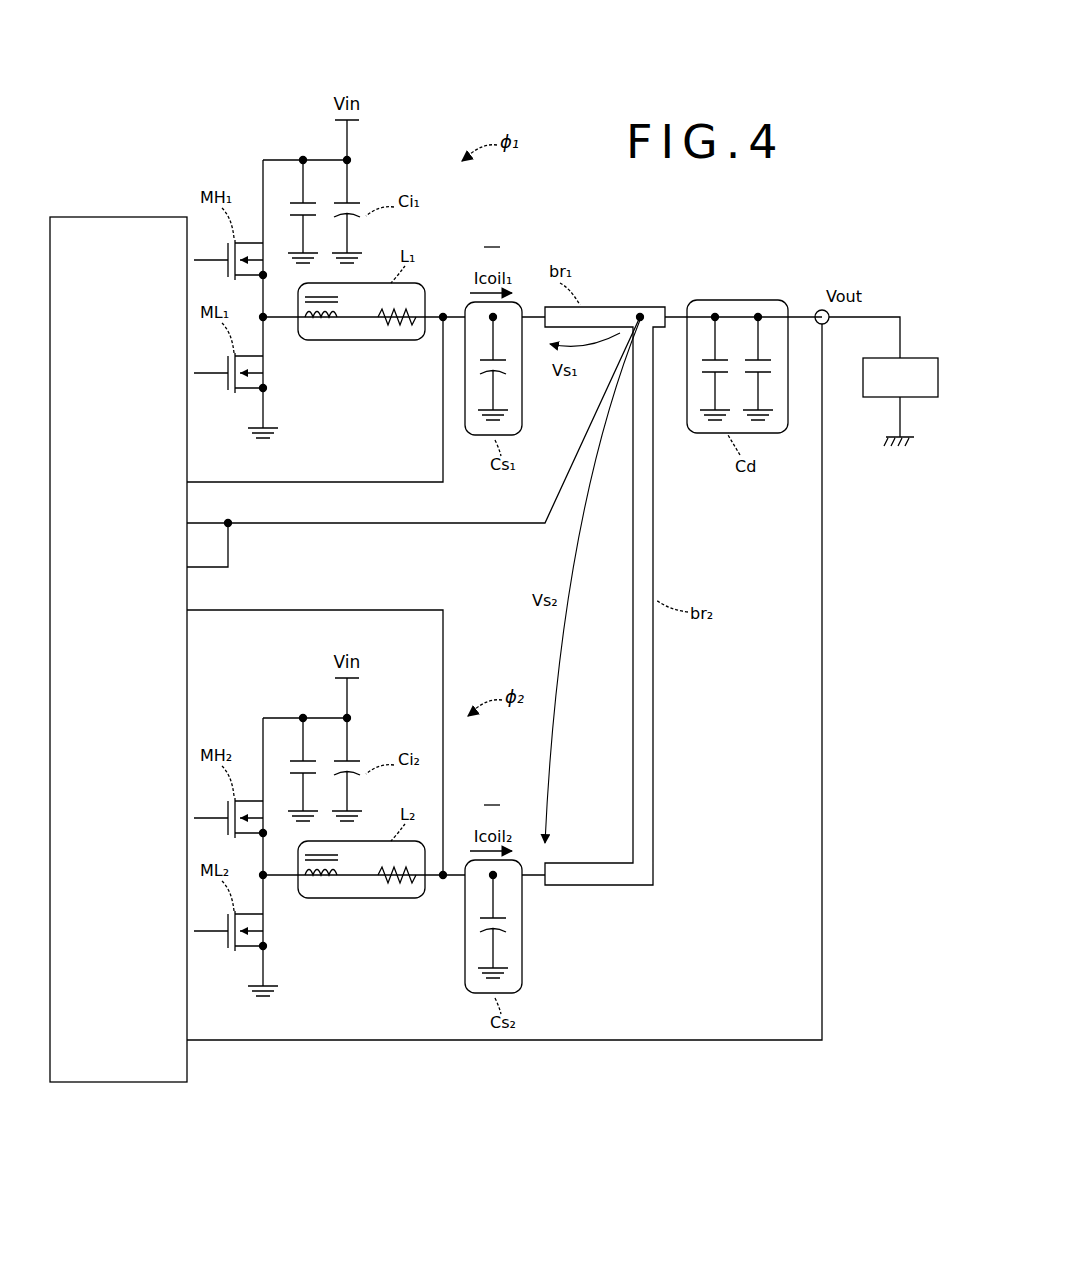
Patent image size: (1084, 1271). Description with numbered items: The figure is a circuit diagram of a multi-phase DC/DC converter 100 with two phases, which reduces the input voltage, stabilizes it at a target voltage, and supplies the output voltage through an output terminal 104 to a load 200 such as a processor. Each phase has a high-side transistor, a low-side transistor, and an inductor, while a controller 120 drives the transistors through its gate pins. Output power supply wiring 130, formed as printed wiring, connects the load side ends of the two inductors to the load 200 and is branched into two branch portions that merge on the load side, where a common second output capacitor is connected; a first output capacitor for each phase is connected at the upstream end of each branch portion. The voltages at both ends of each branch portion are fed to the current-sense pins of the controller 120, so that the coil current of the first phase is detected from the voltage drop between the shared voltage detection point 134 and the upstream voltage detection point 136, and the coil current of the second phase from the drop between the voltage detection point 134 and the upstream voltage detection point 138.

The multi-phase DC/DC converter 100 is at (514, 1142).
The output terminal 104 is at (816, 308).
The controller 120 is at (118, 217).
The output power supply wiring 130 is at (609, 305).
The voltage detection point 134 is at (644, 313).
The voltage detection point 136 is at (442, 328).
The voltage detection point 138 is at (443, 888).
The load 200 is at (914, 357).